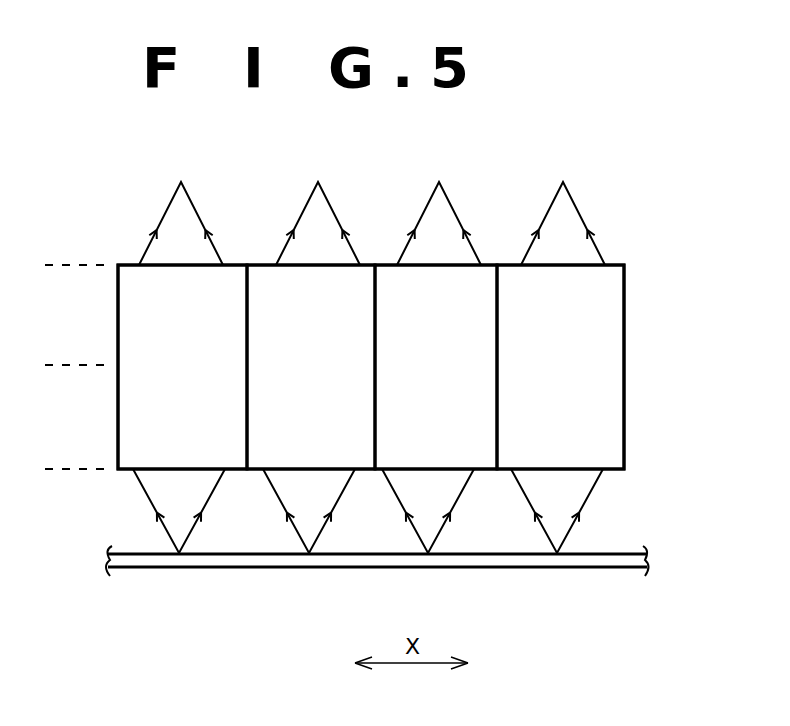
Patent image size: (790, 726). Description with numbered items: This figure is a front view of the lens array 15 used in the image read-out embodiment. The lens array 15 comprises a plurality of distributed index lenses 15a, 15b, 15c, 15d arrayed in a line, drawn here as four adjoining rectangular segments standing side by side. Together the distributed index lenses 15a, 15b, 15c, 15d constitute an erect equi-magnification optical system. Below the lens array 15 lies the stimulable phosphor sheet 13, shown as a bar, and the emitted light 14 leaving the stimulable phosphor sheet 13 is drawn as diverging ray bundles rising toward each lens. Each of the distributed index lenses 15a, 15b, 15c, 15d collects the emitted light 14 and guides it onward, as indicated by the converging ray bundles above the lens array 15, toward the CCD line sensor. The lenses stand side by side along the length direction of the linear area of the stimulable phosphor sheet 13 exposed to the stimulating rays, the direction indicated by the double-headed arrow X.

The stimulable phosphor sheet 13 is at (587, 567).
The emitted light 14 is at (590, 493).
The lens array 15 is at (100, 290).
The distributed index lens 15a is at (612, 272).
The distributed index lens 15b is at (490, 272).
The distributed index lens 15c is at (367, 276).
The distributed index lens 15d is at (236, 276).